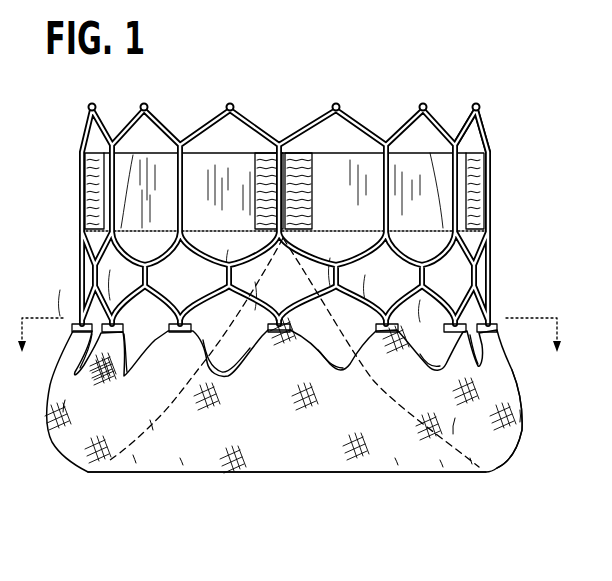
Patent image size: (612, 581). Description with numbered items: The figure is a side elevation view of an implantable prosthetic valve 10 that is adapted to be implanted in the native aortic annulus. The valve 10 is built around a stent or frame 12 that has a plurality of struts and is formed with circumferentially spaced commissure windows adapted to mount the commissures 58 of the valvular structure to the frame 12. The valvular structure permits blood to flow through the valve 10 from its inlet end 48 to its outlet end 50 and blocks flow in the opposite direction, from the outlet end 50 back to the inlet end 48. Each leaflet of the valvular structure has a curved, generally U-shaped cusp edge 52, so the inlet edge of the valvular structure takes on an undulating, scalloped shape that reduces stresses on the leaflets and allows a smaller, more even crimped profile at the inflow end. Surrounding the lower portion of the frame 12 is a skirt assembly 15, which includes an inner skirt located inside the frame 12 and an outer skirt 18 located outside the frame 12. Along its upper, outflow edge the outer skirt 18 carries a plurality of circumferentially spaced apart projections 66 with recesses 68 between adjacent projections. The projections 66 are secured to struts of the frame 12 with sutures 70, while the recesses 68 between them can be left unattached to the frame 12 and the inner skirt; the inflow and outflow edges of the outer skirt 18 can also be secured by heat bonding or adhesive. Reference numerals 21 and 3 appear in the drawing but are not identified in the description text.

The prosthetic valve 10 is at (491, 62).
The frame 12 is at (354, 118).
The outlet end 50 is at (481, 104).
The commissures 58 is at (273, 165).
The projections 66 is at (480, 322).
The recesses 68 is at (504, 370).
The outer skirt 18 is at (518, 418).
The skirt assembly 15 is at (514, 444).
The inlet end 48 is at (459, 473).
The inflow end 21 is at (117, 472).
The cusp edge 52 is at (163, 413).
The fabric 3 is at (207, 450).
The sutures 70 is at (300, 347).